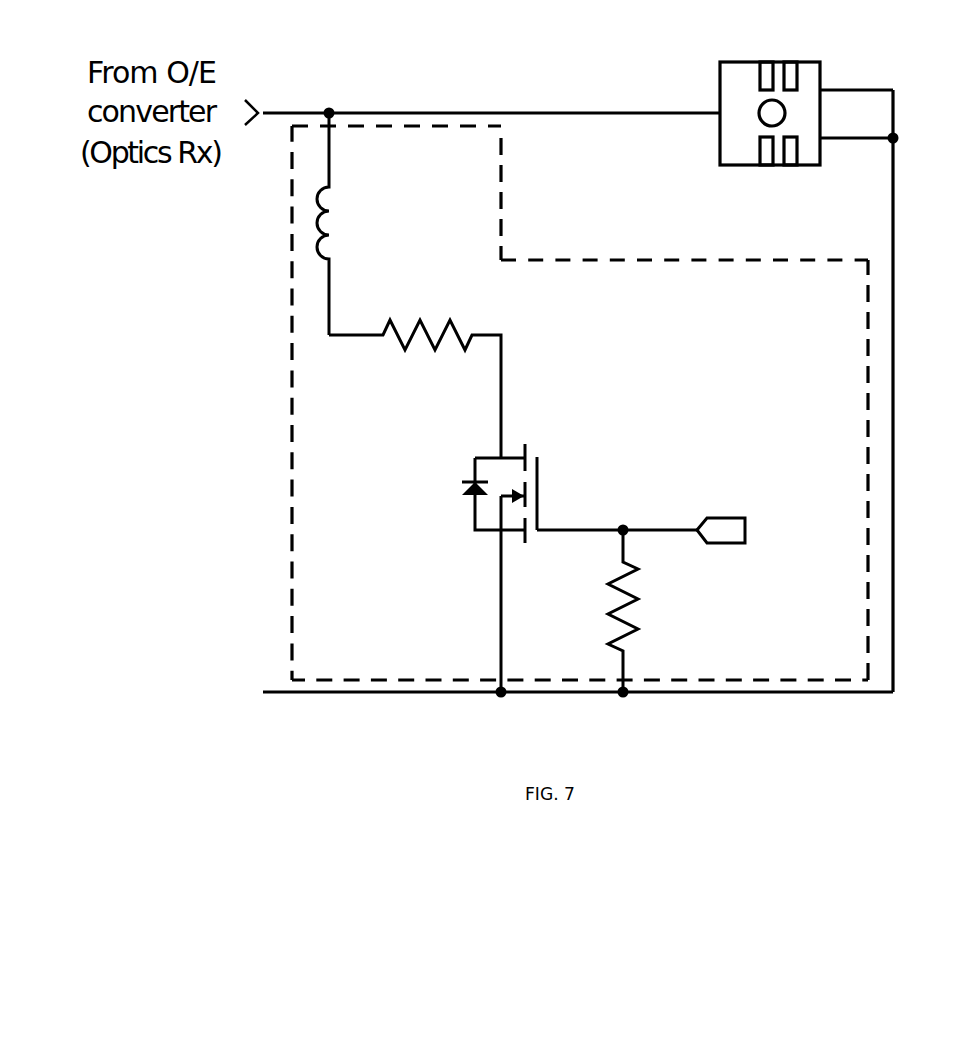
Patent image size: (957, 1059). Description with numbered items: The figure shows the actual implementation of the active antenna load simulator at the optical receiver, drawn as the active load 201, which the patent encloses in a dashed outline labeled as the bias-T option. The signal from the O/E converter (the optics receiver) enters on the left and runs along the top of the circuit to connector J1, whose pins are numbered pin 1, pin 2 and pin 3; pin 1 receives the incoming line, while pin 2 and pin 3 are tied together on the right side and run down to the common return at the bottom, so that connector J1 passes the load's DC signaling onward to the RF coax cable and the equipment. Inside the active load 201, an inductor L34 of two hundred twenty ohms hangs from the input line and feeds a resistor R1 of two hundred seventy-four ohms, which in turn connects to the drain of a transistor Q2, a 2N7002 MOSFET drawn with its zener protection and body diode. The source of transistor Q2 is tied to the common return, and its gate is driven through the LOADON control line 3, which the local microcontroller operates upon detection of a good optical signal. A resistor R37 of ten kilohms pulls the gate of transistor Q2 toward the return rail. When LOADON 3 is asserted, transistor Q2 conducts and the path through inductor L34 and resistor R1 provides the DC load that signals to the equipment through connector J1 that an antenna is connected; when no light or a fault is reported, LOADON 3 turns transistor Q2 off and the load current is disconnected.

The active load 201 is at (613, 417).
The connector J1 is at (770, 101).
The inductor L34 (220 ohms) L34 is at (382, 224).
The resistor R1 (274 ohms) R1 is at (415, 374).
The MOSFET Q2 (2N7002) Q2 is at (537, 556).
The resistor R37 (10.0K) R37 is at (658, 611).
The connector J1 pin 1 is at (680, 102).
The connector J1 pin 2 is at (856, 75).
The LOADON control line 3 is at (856, 127).